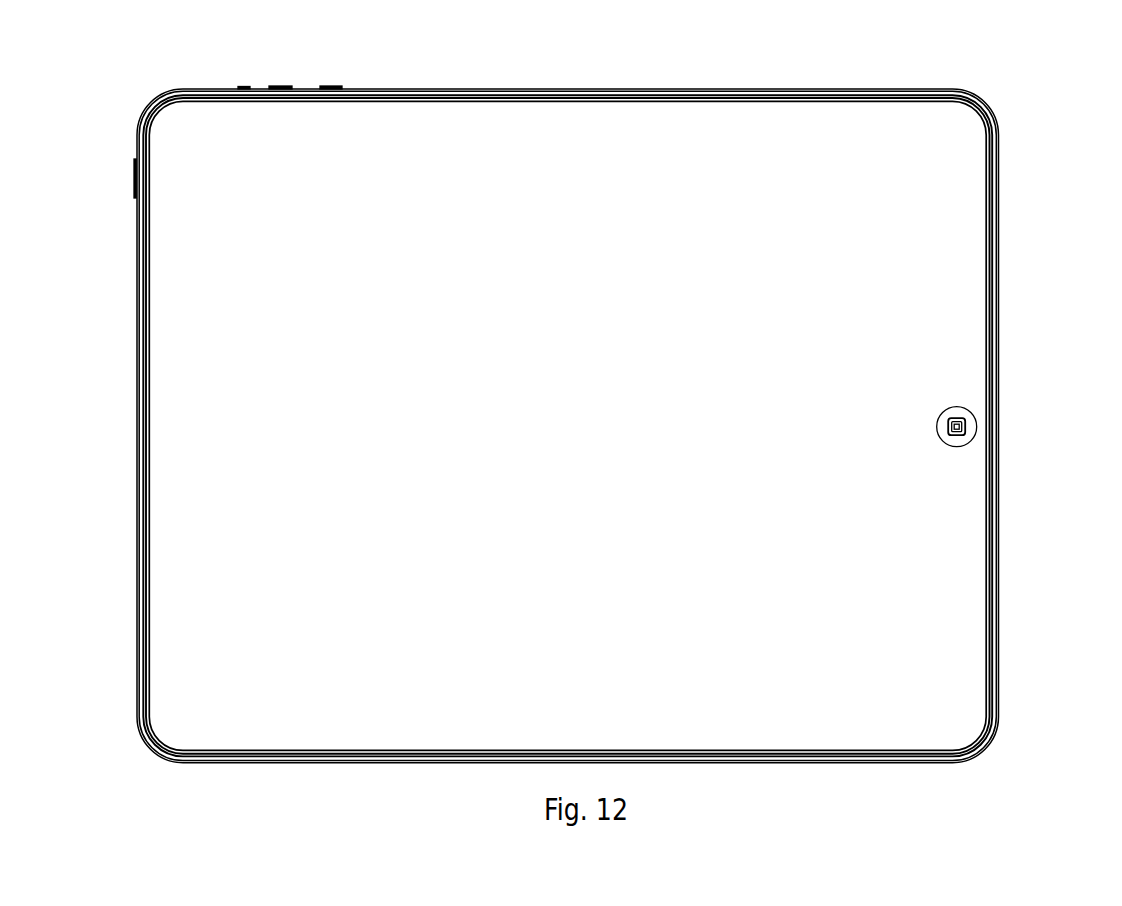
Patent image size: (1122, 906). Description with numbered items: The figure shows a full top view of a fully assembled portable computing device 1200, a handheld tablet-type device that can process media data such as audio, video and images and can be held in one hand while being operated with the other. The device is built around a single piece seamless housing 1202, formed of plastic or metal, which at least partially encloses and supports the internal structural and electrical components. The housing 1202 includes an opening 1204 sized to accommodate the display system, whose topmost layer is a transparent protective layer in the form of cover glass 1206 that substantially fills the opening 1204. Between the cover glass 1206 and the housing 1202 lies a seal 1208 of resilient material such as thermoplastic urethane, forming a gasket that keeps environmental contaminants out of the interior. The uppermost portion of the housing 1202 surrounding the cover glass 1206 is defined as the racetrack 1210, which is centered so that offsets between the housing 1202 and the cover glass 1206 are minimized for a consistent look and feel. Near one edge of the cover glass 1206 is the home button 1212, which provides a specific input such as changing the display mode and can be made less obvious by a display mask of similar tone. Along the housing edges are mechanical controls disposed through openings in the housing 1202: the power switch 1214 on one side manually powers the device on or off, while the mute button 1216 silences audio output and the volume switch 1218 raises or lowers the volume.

The portable computing device 1200 is at (1030, 634).
The housing 1202 is at (1006, 232).
The opening 1204 is at (924, 99).
The cover glass 1206 is at (597, 426).
The seal 1208 is at (1003, 337).
The racetrack 1210 is at (1005, 403).
The home button 1212 is at (950, 396).
The power switch 1214 is at (122, 174).
The mute button 1216 is at (227, 79).
The volume switch 1218 is at (335, 78).